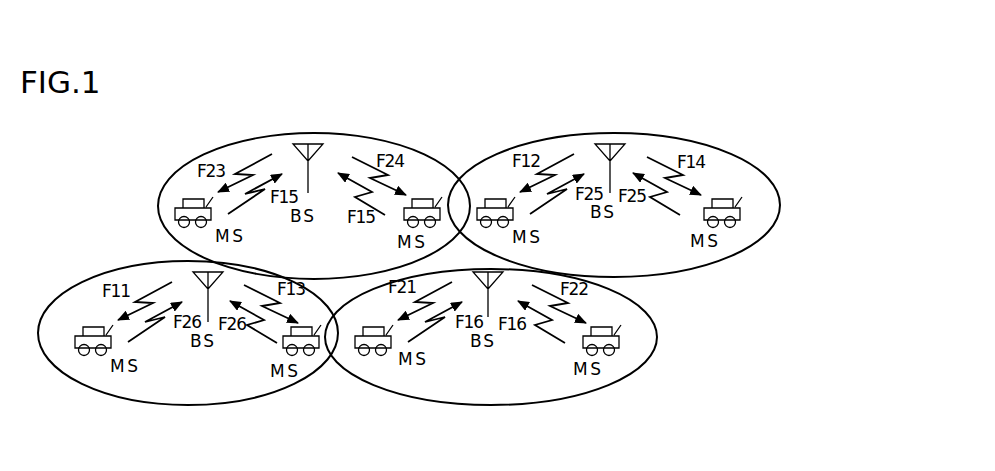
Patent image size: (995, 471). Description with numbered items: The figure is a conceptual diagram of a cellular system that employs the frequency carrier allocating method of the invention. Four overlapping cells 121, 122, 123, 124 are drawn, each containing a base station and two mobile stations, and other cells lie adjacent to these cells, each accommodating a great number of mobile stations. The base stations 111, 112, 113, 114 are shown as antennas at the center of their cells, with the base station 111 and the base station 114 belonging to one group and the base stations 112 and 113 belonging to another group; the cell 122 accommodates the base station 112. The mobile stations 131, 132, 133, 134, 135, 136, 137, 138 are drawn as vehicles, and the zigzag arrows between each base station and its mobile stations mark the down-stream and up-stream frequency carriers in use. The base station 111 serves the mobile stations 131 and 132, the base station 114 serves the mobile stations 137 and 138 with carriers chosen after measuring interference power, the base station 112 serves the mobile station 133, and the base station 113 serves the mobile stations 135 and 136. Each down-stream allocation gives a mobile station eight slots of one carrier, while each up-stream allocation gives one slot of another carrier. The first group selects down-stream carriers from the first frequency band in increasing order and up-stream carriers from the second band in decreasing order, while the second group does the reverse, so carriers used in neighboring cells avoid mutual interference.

The base station 111 is at (210, 323).
The base station 112 is at (490, 318).
The base station 113 is at (310, 194).
The base station 114 is at (612, 194).
The cell 121 is at (131, 402).
The cell 122 is at (584, 398).
The cell 123 is at (371, 134).
The cell 124 is at (687, 137).
The mobile station 131 is at (95, 328).
The mobile station 132 is at (307, 358).
The mobile station 133 is at (380, 357).
The mobile station 134 is at (620, 340).
The mobile station 135 is at (175, 210).
The mobile station 136 is at (423, 198).
The mobile station 137 is at (497, 197).
The mobile station 138 is at (741, 200).